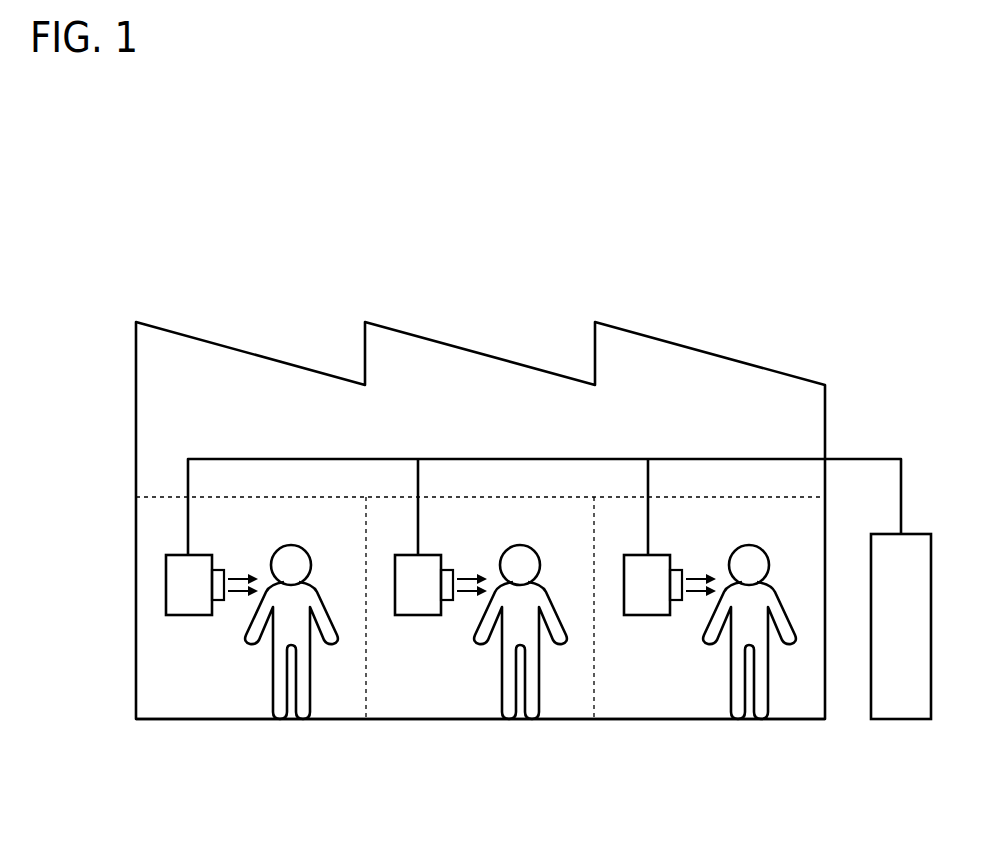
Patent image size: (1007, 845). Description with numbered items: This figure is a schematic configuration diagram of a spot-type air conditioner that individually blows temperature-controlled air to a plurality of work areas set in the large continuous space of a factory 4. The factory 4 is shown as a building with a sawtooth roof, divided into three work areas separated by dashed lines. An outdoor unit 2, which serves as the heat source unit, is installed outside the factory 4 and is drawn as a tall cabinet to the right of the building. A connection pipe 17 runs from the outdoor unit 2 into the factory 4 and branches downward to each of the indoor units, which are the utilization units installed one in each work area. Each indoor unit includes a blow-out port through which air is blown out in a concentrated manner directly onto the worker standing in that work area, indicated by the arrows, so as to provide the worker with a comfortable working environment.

The outdoor unit 2 is at (915, 534).
The factory 4 is at (729, 355).
The connection pipe 17 is at (678, 459).